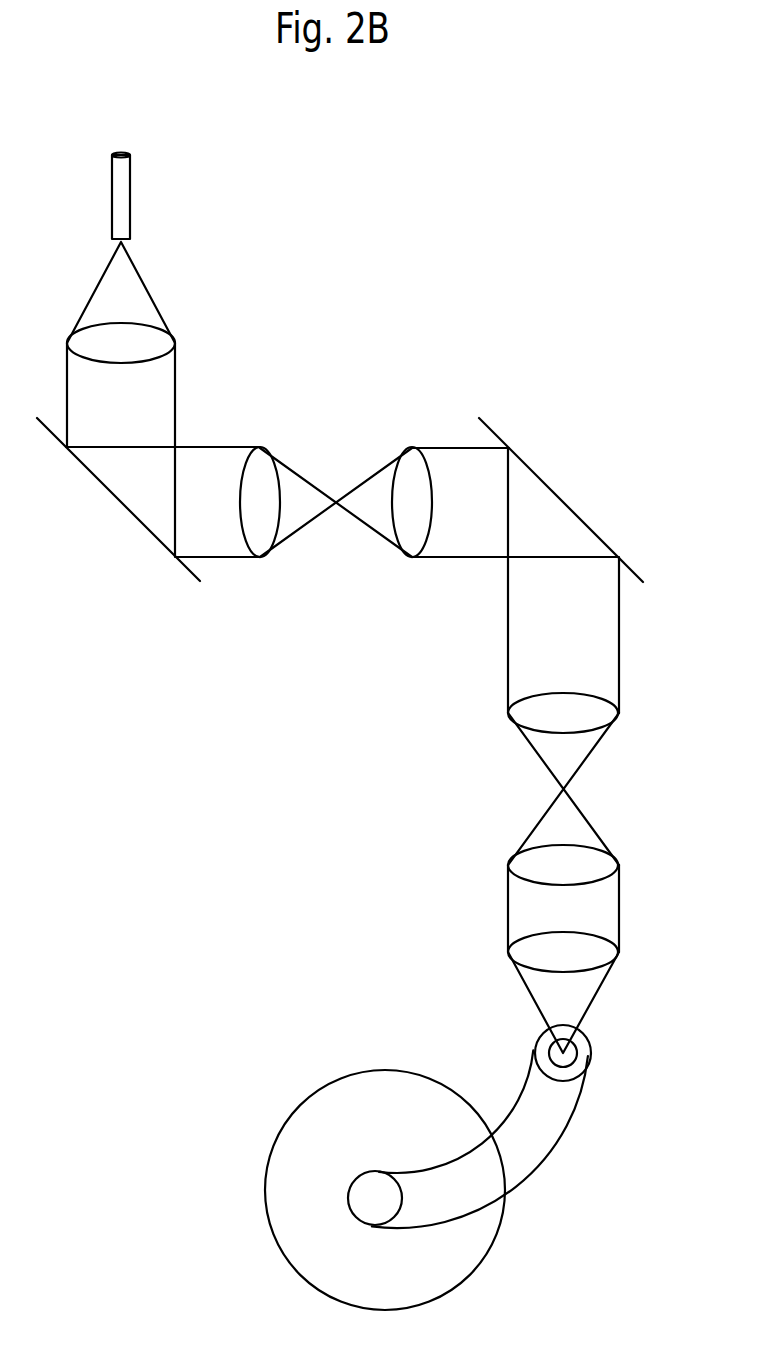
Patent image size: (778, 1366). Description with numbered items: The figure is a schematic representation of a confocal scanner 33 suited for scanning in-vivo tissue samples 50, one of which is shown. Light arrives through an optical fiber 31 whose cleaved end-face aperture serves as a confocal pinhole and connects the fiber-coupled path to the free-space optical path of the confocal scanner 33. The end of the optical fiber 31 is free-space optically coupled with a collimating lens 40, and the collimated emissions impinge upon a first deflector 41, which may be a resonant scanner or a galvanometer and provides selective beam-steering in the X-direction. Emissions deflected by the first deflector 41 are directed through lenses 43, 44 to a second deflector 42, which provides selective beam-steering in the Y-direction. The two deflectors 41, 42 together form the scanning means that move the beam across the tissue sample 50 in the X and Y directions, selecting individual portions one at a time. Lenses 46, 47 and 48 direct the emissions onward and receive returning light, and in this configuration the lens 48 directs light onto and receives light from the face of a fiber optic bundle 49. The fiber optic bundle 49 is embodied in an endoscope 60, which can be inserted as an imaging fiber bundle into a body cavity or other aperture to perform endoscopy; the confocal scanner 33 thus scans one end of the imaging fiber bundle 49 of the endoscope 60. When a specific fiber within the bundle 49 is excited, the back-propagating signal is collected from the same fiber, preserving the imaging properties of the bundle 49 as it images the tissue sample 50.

The optical fiber 31 is at (130, 182).
The confocal scanner 33 is at (319, 290).
The collimating lens 40 is at (178, 348).
The first deflector 41 is at (116, 497).
The second deflector 42 is at (563, 500).
The lens 43 is at (263, 447).
The lens 44 is at (408, 447).
The lens 46 is at (510, 723).
The lens 47 is at (510, 863).
The lens 48 is at (510, 955).
The fiber optic bundle 49 is at (572, 1057).
The tissue sample 50 is at (295, 1117).
The endoscope 60 is at (562, 1122).